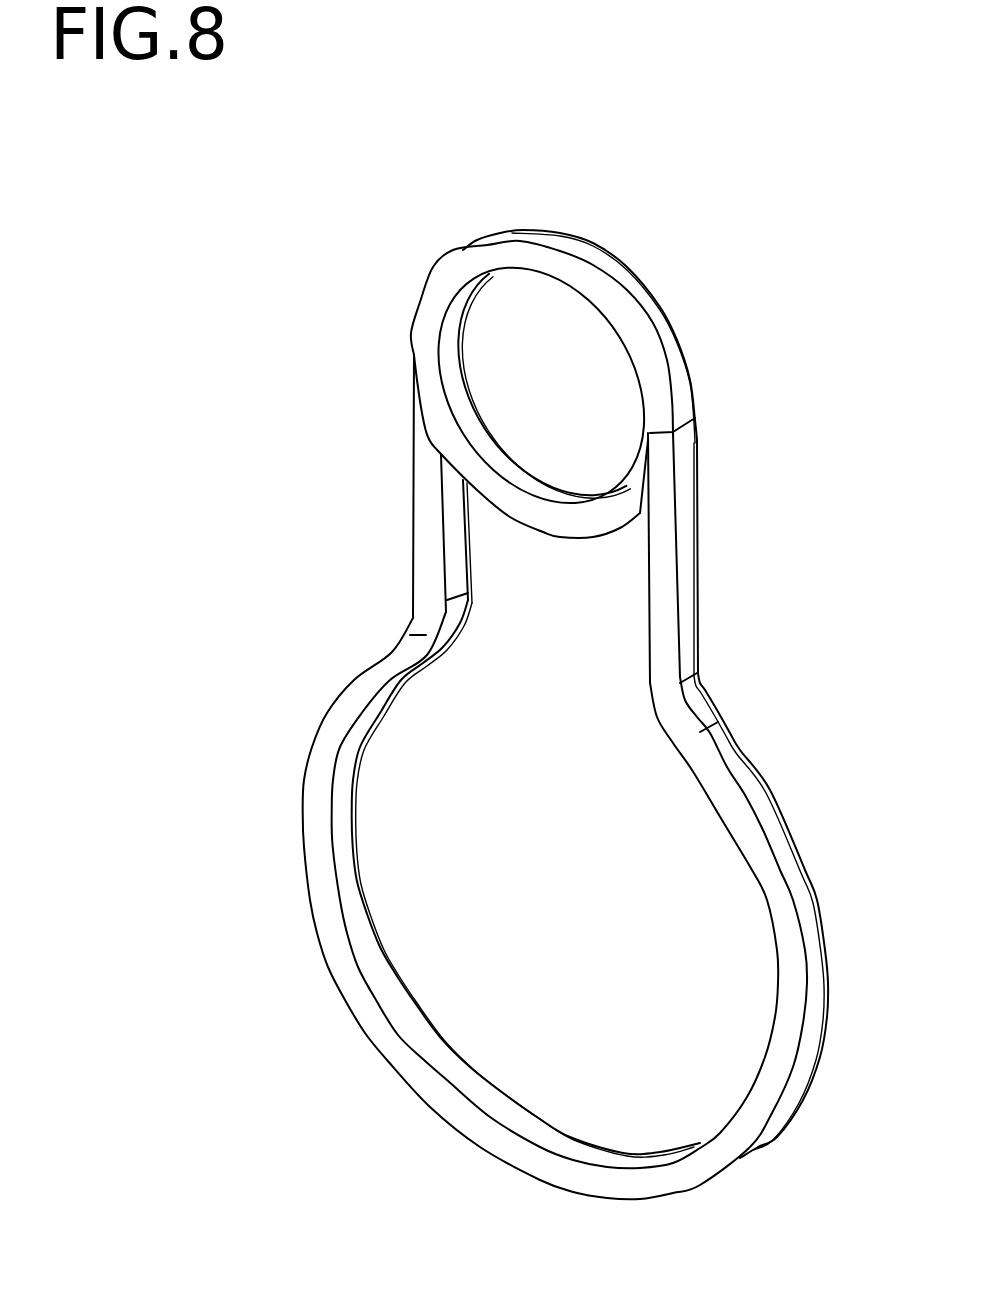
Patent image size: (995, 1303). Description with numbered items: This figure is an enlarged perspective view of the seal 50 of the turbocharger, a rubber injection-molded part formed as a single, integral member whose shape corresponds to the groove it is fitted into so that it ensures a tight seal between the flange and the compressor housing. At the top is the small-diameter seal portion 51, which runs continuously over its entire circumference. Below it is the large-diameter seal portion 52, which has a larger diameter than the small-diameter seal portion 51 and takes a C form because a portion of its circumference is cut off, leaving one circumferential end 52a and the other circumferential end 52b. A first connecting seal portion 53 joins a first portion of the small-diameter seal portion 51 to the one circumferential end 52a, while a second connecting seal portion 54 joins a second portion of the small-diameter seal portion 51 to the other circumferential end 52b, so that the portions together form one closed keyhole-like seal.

The seal 50 is at (659, 265).
The small-diameter seal portion 51 is at (455, 272).
The large-diameter seal portion 52 is at (775, 1088).
The one circumferential end of the large-diameter seal portion 52a is at (425, 635).
The other circumferential end of the large-diameter seal portion 52b is at (670, 708).
The first connecting seal portion 53 is at (428, 499).
The second connecting seal portion 54 is at (660, 528).